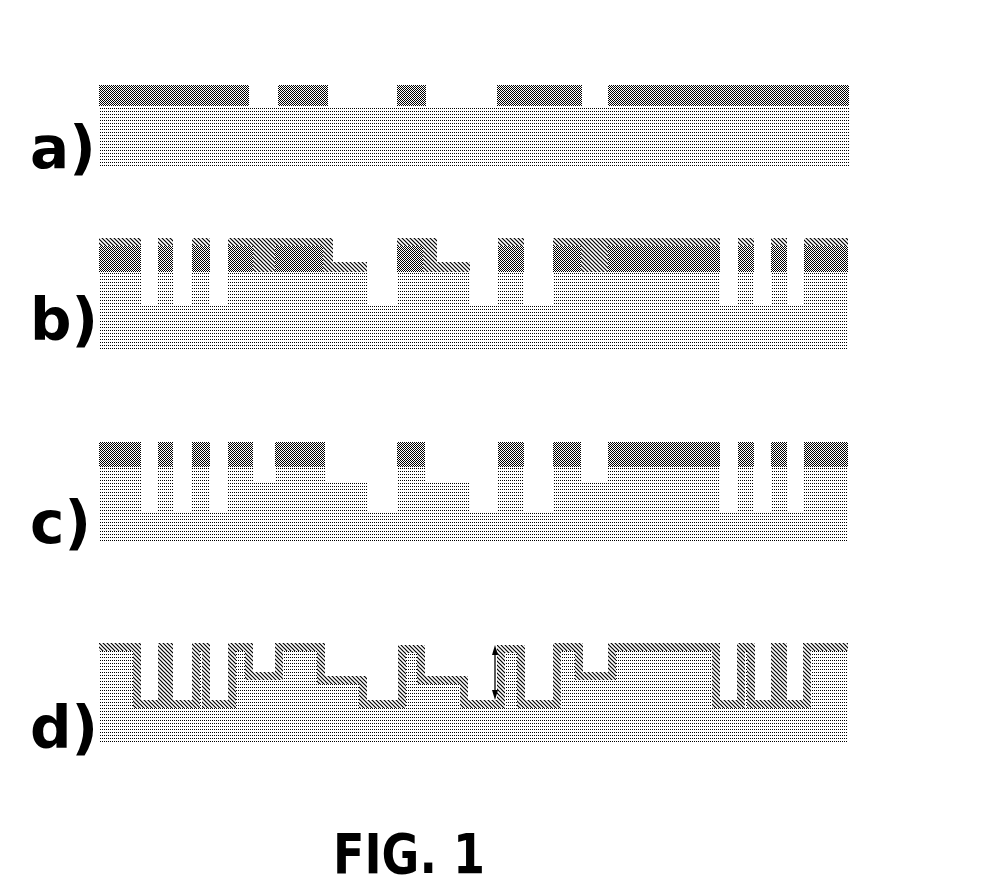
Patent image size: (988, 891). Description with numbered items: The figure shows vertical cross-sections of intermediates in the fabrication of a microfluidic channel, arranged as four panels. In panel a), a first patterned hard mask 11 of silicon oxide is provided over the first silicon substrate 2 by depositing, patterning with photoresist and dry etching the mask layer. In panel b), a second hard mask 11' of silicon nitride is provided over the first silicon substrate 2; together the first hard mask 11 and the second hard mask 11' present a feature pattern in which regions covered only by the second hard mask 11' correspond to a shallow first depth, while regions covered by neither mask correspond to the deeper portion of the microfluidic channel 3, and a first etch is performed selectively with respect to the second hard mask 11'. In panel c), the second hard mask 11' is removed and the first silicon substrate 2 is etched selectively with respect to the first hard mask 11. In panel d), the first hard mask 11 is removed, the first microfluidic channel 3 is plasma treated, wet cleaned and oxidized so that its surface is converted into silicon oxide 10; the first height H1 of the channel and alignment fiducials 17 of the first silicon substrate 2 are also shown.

The first silicon substrate 2 is at (851, 137).
The first microfluidic channel 3 is at (473, 466).
The silicon oxide 10 is at (302, 643).
The first patterned hard mask 11 is at (474, 249).
The second hard mask 11' is at (473, 225).
The alignment fiducials 17 is at (387, 635).
The first height H1 is at (484, 672).